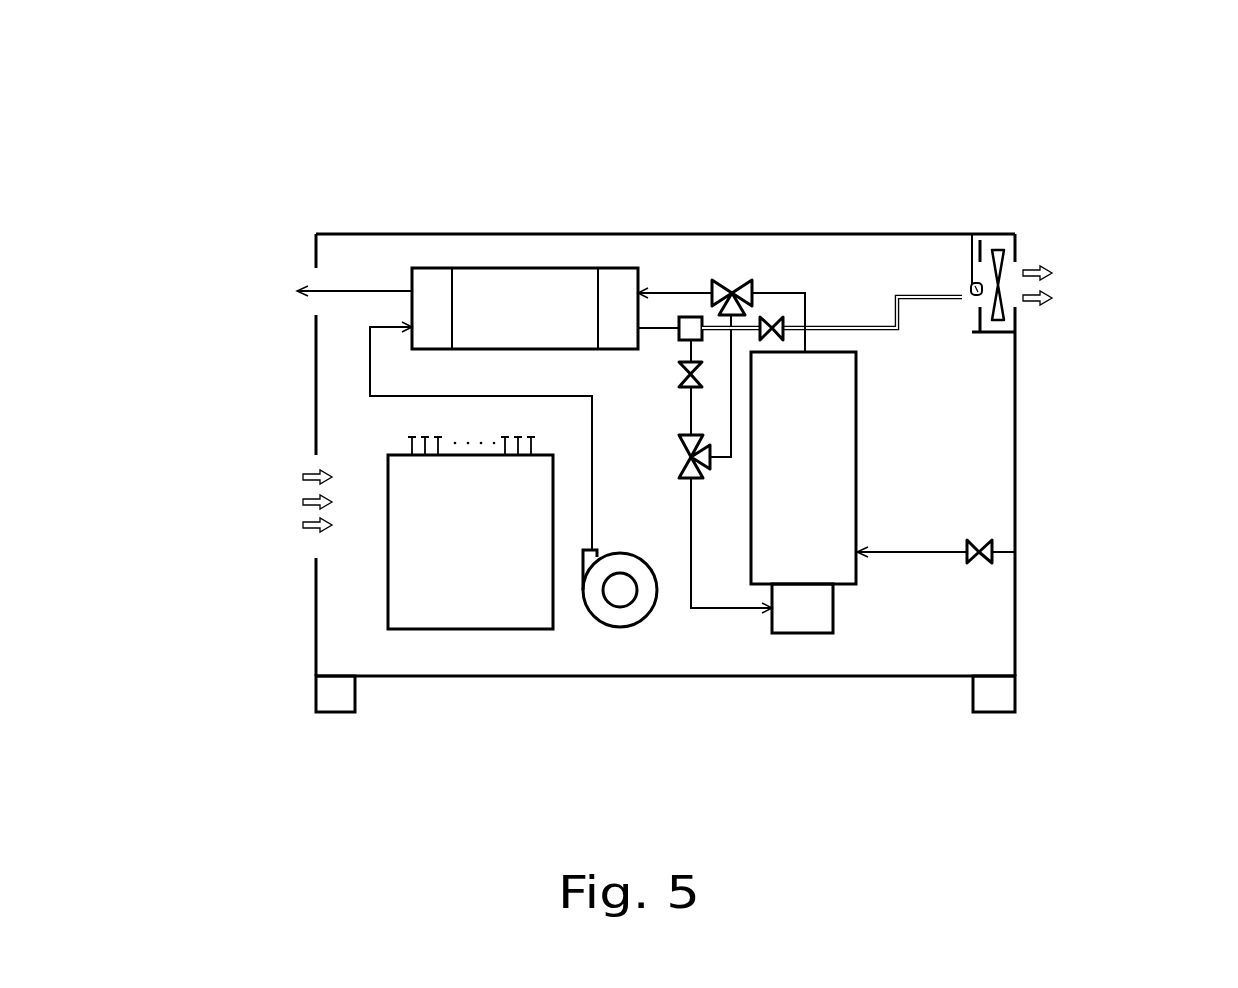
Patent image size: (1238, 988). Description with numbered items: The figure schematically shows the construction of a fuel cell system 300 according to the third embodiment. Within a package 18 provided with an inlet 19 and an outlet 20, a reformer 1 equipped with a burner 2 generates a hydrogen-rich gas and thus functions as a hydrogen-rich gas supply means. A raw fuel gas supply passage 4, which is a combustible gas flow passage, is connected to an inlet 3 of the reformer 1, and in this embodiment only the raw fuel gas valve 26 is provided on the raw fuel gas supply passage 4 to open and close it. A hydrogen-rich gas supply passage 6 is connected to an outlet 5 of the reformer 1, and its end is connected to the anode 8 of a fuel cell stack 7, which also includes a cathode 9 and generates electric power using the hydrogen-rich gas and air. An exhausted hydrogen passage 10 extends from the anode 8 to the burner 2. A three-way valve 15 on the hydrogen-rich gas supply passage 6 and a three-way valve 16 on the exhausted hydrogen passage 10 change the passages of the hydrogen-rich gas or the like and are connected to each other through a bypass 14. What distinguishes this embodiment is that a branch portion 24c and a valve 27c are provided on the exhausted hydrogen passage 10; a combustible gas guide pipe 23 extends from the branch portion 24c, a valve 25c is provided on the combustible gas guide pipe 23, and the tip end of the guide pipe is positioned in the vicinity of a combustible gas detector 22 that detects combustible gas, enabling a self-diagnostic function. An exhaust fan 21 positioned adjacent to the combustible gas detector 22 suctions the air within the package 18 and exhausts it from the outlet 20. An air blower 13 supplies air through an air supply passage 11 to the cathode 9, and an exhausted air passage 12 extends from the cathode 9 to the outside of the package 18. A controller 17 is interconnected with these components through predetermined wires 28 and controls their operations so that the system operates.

The fuel cell system 300 is at (1150, 148).
The reformer 1 is at (857, 460).
The burner 2 is at (792, 633).
The inlet 3 is at (859, 556).
The raw fuel gas supply passage 4 is at (937, 553).
The outlet 5 is at (807, 348).
The hydrogen-rich gas supply passage 6 is at (768, 293).
The fuel cell stack 7 is at (508, 268).
The anode 8 is at (615, 268).
The cathode 9 is at (432, 268).
The exhausted hydrogen passage 10 is at (713, 608).
The air supply passage 11 is at (400, 396).
The exhausted air passage 12 is at (345, 291).
The air blower 13 is at (620, 630).
The bypass 14 is at (718, 280).
The three-way valve 15 is at (730, 362).
The three-way valve 16 is at (684, 480).
The controller 17 is at (483, 630).
The package 18 is at (316, 622).
The inlet 19 is at (315, 542).
The outlet 20 is at (1013, 272).
The exhaust fan 21 is at (997, 248).
The combustible gas detector 22 is at (970, 288).
The combustible gas guide pipe 23 is at (917, 297).
The branch portion 24c is at (690, 317).
The valve 25c is at (778, 315).
The raw fuel gas valve 26 is at (993, 557).
The valve 27c is at (683, 378).
The wires 28 is at (408, 442).